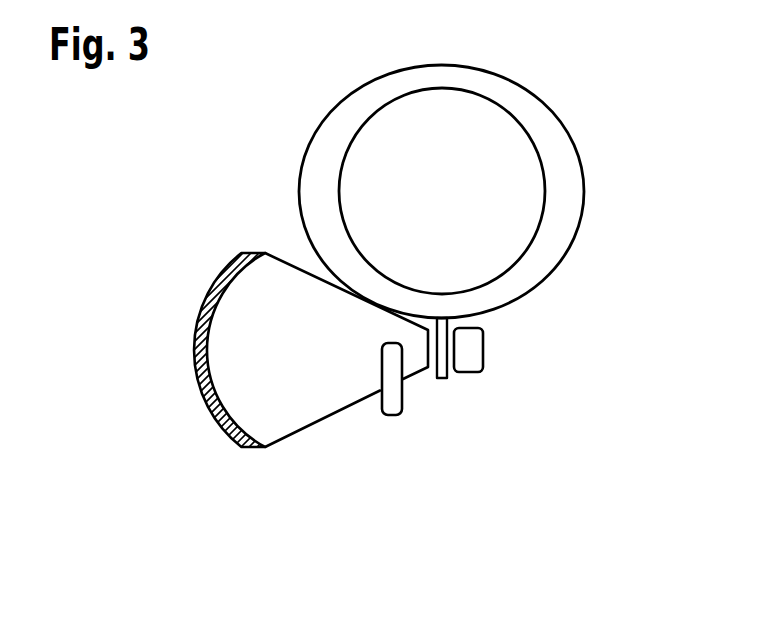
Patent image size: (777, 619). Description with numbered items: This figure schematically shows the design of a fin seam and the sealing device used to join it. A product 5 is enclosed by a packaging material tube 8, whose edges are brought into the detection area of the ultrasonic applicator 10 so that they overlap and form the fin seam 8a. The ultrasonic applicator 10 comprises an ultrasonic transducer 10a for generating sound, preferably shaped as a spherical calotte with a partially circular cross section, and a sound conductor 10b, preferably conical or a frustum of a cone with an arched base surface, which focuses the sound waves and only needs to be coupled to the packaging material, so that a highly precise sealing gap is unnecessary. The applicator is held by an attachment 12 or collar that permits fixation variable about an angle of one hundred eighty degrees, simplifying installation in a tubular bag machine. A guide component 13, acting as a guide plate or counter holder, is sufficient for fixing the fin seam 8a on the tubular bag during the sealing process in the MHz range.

The product 5 is at (543, 225).
The packaging material tube 8 is at (580, 158).
The fin seam 8a is at (447, 318).
The ultrasonic applicator 10 is at (229, 314).
The ultrasonic transducer 10a is at (197, 352).
The sound conductor 10b is at (243, 387).
The attachment 12 is at (393, 407).
The guide component 13 is at (470, 355).